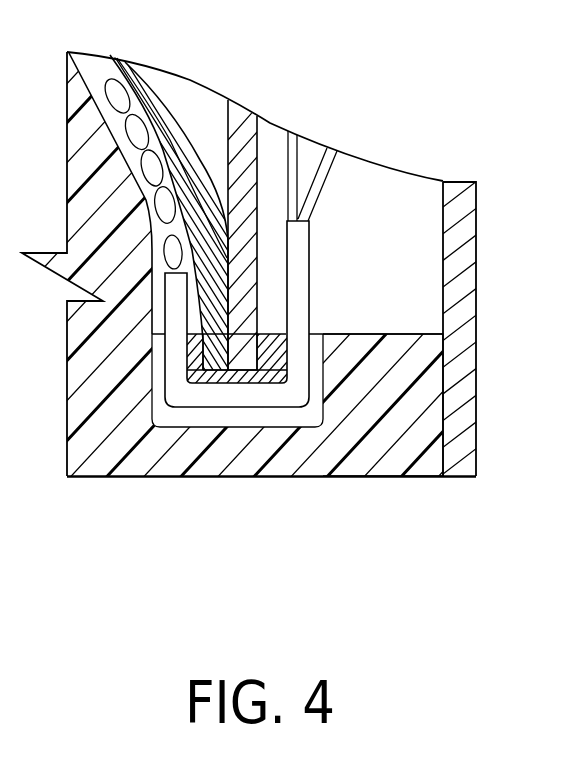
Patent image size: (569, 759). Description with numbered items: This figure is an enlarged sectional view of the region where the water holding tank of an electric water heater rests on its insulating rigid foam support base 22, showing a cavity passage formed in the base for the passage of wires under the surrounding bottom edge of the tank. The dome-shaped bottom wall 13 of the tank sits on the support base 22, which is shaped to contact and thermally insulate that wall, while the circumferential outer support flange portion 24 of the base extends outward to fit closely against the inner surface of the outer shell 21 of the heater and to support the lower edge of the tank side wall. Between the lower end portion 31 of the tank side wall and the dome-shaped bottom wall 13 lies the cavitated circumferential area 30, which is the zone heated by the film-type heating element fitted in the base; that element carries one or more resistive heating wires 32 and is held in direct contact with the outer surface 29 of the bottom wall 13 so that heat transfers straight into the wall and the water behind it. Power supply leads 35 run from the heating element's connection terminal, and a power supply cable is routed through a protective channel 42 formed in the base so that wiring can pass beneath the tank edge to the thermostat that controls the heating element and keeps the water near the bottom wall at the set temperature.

The dome-shaped bottom wall 13 is at (147, 100).
The outer shell 21 is at (462, 318).
The insulating rigid foam support base 22 is at (153, 442).
The circumferential outer support flange portion 24 is at (422, 402).
The outer surface 29 is at (100, 96).
The cavitated circumferential area 30 is at (195, 117).
The lower end portion 31 is at (250, 162).
The resistive heating wires 32 is at (130, 133).
The power supply leads 35 is at (290, 287).
The protective channel 42 is at (157, 388).